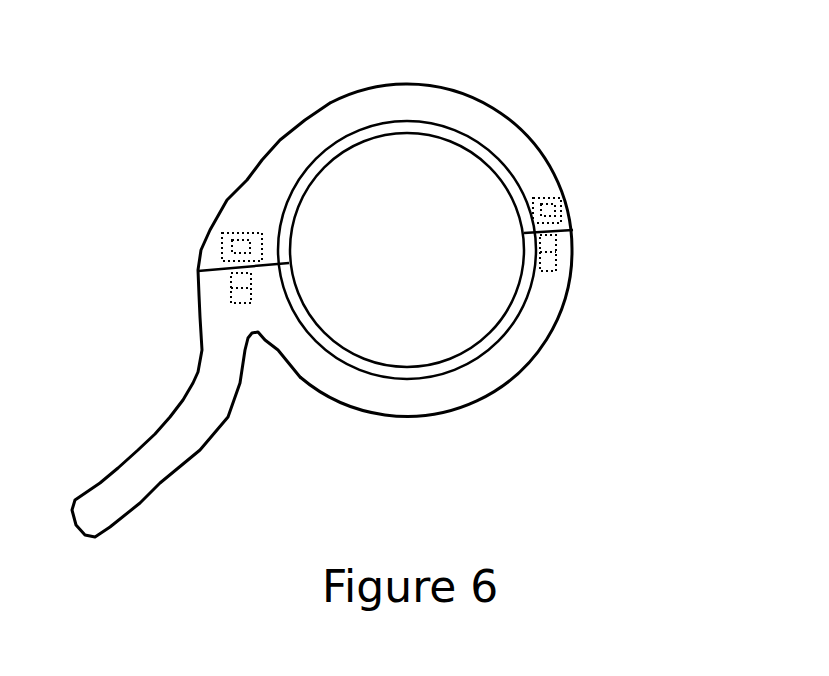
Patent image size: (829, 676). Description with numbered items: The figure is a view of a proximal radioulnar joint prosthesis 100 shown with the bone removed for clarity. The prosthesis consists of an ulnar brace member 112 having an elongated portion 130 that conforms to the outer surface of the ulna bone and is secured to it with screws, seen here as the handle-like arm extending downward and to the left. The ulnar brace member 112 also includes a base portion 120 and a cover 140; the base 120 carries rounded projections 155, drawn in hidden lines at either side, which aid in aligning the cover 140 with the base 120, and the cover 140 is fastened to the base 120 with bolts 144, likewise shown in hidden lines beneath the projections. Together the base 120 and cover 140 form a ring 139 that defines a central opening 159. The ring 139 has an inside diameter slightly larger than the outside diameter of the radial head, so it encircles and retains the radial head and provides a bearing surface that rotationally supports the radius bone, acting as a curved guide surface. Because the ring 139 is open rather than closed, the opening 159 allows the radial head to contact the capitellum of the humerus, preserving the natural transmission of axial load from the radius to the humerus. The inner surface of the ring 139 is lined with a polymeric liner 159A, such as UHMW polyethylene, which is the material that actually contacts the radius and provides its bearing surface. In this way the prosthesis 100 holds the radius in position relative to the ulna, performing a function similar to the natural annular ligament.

The proximal radioulnar joint prosthesis 100 is at (562, 97).
The ulnar brace member 112 is at (415, 418).
The base portion 120 is at (548, 322).
The elongated portion 130 is at (147, 468).
The ring 139 is at (515, 380).
The cover 140 is at (452, 88).
The bolts 144 is at (225, 288).
The rounded projections 155 is at (250, 230).
The opening 159 is at (362, 128).
The polymeric liner 159A is at (510, 192).